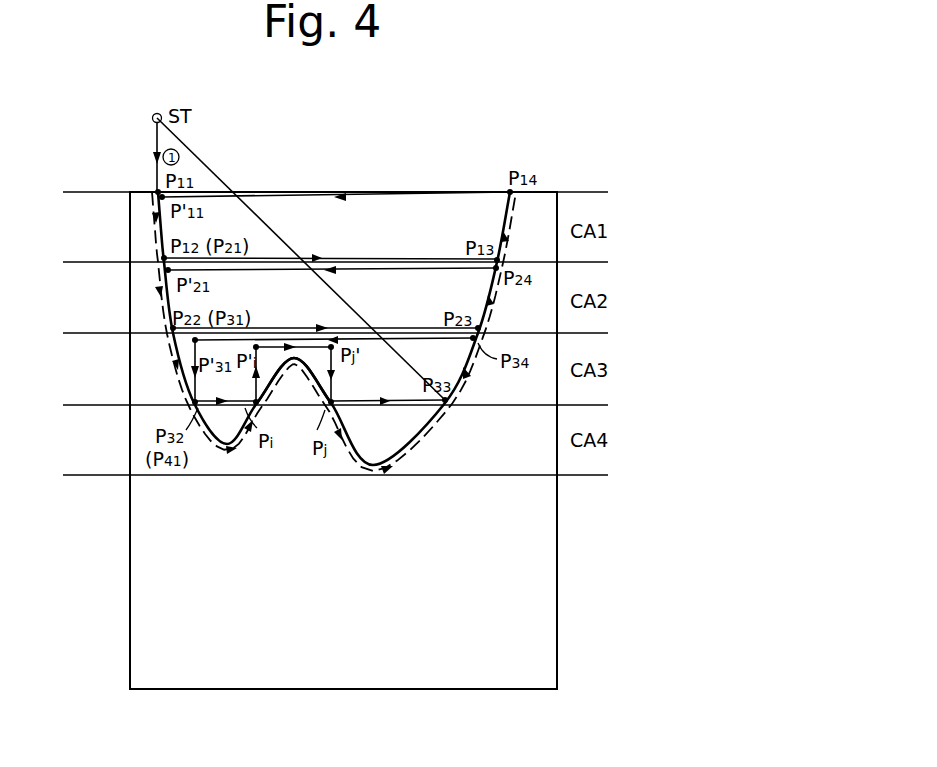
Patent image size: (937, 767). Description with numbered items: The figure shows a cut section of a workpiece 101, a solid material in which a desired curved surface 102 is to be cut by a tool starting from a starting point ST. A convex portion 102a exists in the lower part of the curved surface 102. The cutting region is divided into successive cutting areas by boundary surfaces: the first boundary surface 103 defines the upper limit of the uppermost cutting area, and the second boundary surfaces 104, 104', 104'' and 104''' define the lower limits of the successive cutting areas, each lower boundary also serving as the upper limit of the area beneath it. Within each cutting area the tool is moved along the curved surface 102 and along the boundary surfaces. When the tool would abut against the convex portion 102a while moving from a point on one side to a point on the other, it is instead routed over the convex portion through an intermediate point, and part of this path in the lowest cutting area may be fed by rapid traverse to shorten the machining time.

The workpiece 101 is at (557, 657).
The curved surface 102 is at (212, 440).
The convex portion 102a is at (293, 395).
The first boundary surface 103 is at (75, 192).
The second boundary surface 104 is at (308, 264).
The second boundary surface 104' is at (306, 335).
The second boundary surface 104'' is at (306, 407).
The second boundary surface 104''' is at (313, 468).